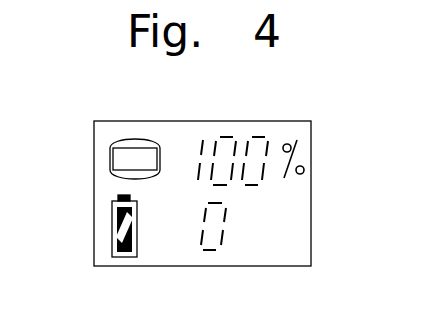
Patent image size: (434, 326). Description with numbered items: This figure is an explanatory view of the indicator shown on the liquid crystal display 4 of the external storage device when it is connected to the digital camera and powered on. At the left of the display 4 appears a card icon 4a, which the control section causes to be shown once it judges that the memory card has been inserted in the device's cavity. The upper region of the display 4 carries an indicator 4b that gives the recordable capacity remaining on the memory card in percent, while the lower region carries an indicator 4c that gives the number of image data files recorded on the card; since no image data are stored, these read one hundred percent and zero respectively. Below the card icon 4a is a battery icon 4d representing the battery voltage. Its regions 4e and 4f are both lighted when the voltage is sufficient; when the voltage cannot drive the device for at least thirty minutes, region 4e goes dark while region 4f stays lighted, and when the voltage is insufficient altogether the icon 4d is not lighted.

The display 4 is at (312, 197).
The card icon 4a is at (110, 160).
The indicator 4b is at (271, 131).
The indicator 4c is at (230, 237).
The icon 4d is at (105, 237).
The region 4e is at (85, 251).
The region 4f is at (120, 257).